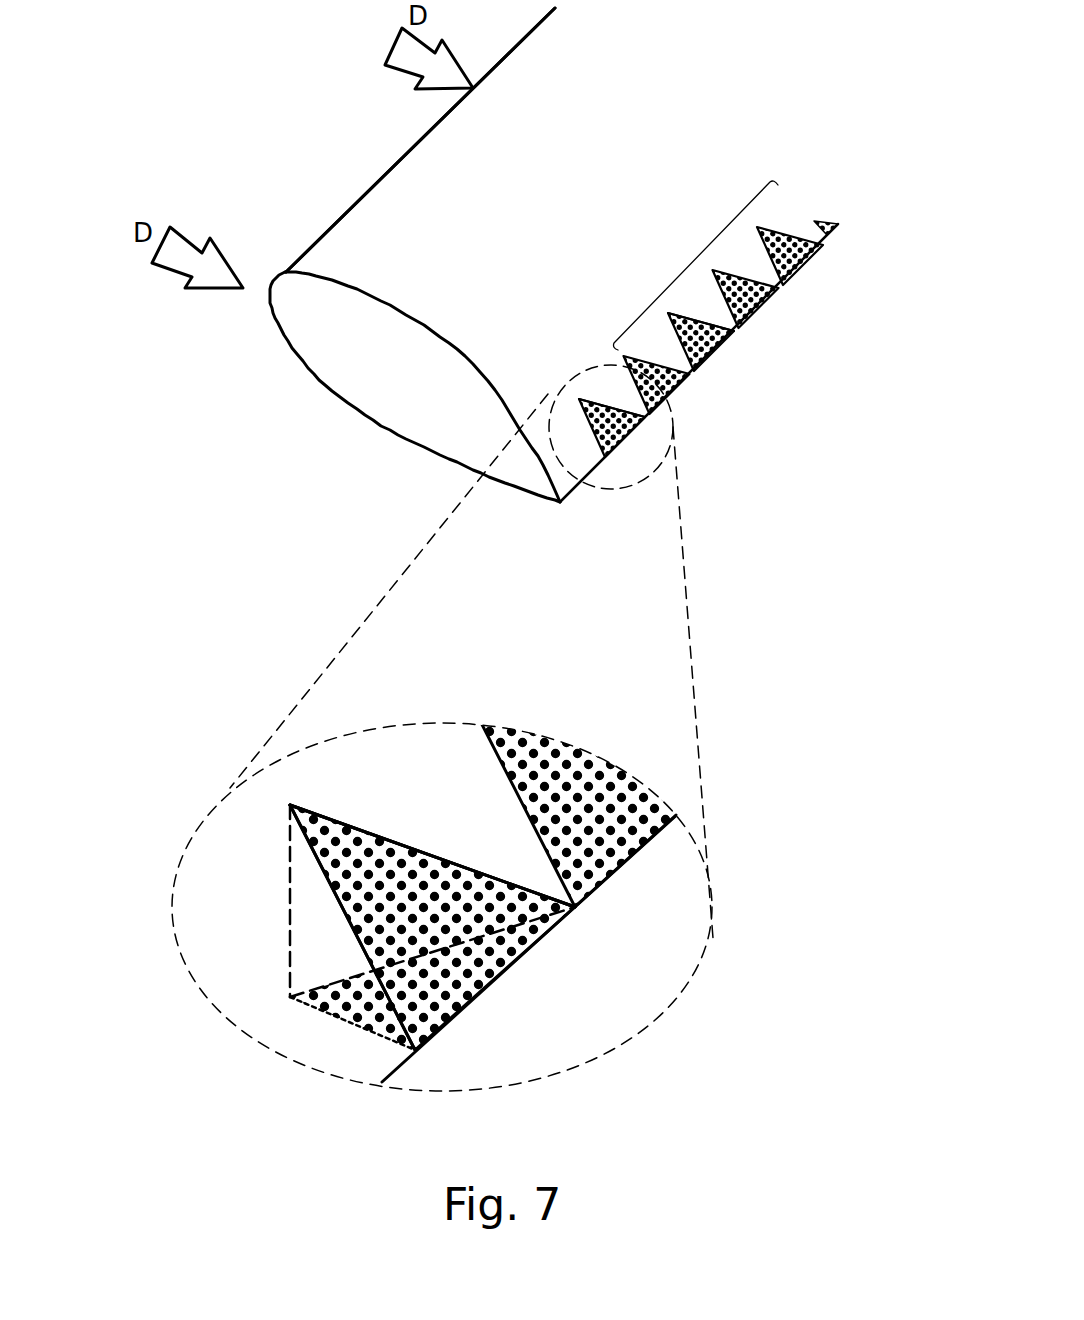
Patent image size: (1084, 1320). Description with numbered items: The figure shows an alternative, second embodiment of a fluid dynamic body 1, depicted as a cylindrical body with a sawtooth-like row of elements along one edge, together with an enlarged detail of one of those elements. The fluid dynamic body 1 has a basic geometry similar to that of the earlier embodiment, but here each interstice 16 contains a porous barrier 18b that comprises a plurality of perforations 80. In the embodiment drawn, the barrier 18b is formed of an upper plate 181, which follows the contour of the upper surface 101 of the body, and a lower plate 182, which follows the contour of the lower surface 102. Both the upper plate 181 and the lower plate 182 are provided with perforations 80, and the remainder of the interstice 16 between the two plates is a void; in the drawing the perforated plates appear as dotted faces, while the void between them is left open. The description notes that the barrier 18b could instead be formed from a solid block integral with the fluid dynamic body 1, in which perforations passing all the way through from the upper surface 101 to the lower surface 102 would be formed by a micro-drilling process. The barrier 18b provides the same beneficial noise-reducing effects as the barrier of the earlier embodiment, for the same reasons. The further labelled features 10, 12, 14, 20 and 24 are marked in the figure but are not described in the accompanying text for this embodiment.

The fluid dynamic body 1 is at (430, 160).
The upper surface 101 is at (420, 273).
The lower surface 102 is at (373, 362).
The substrate 10 is at (766, 301).
The sawtooth microstructure 12 is at (692, 250).
The prism tooth 14 is at (742, 246).
The interstice 16 is at (793, 257).
The porous barrier 18b is at (772, 306).
The base of tooth 20 is at (290, 868).
The apex edge 24 is at (697, 310).
The perforations 80 is at (577, 398).
The upper plate 181 is at (405, 860).
The lower plate 182 is at (332, 1002).